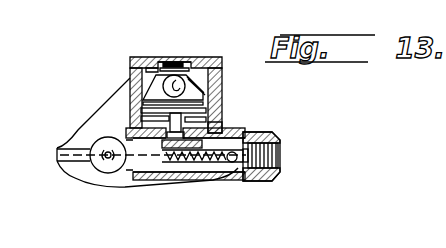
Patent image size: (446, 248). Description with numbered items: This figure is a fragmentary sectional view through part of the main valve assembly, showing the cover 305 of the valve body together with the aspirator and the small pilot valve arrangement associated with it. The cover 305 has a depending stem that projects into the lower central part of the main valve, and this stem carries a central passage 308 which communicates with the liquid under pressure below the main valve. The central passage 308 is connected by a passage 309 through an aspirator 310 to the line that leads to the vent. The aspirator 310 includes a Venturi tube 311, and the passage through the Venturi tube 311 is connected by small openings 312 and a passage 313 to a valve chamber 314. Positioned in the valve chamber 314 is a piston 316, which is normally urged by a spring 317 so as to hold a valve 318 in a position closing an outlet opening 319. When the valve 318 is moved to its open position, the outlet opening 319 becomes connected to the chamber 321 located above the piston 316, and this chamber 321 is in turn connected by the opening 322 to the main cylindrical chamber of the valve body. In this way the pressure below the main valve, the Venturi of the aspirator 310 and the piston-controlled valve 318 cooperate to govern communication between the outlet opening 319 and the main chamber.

The cover 305 is at (70, 143).
The central passage 308 is at (82, 166).
The passage 309 is at (128, 172).
The aspirator 310 is at (235, 163).
The Venturi tube 311 is at (205, 167).
The small openings 312 is at (227, 133).
The passage 313 is at (228, 127).
The valve chamber 314 is at (229, 113).
The piston 316 is at (155, 87).
The spring 317 is at (148, 115).
The valve 318 is at (172, 60).
The outlet opening 319 is at (181, 57).
The chamber 321 is at (211, 69).
The opening 322 is at (157, 55).